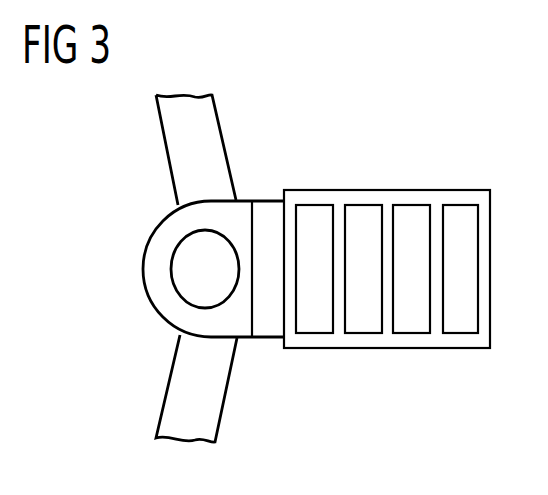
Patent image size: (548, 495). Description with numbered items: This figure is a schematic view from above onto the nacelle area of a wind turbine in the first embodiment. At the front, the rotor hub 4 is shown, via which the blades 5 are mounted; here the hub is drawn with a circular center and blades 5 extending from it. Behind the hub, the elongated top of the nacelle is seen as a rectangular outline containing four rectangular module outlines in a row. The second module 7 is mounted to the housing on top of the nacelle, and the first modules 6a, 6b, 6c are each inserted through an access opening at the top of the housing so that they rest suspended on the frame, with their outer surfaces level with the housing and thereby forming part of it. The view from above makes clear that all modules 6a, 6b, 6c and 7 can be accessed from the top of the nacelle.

The rotor hub 4 is at (148, 245).
The blade 5 is at (174, 153).
The second module 7 is at (312, 213).
The first module 6a is at (360, 213).
The first module 6b is at (412, 213).
The first module 6c is at (460, 213).